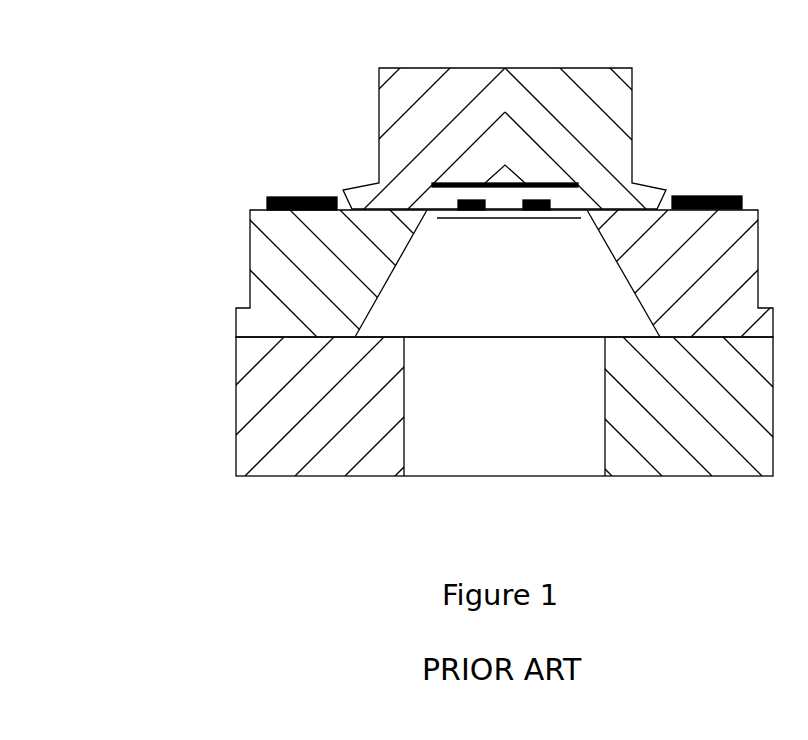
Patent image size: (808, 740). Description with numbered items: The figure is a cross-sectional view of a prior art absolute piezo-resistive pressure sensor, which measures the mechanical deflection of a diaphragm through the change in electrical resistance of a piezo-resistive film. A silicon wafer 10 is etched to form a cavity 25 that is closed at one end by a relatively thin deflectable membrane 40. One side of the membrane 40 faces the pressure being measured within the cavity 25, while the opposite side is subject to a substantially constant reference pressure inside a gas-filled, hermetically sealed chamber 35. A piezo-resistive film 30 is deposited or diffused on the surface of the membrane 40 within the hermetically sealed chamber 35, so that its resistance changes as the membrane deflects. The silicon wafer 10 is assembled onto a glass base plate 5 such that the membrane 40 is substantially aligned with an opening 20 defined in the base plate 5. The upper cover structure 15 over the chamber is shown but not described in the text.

The glass base plate 5 is at (288, 399).
The silicon wafer 10 is at (295, 277).
The electrode block 15 is at (410, 100).
The opening 20 is at (504, 406).
The cavity 25 is at (507, 273).
The piezo-resistive film 30 is at (460, 200).
The hermetically sealed chamber 35 is at (572, 183).
The membrane 40 is at (500, 218).